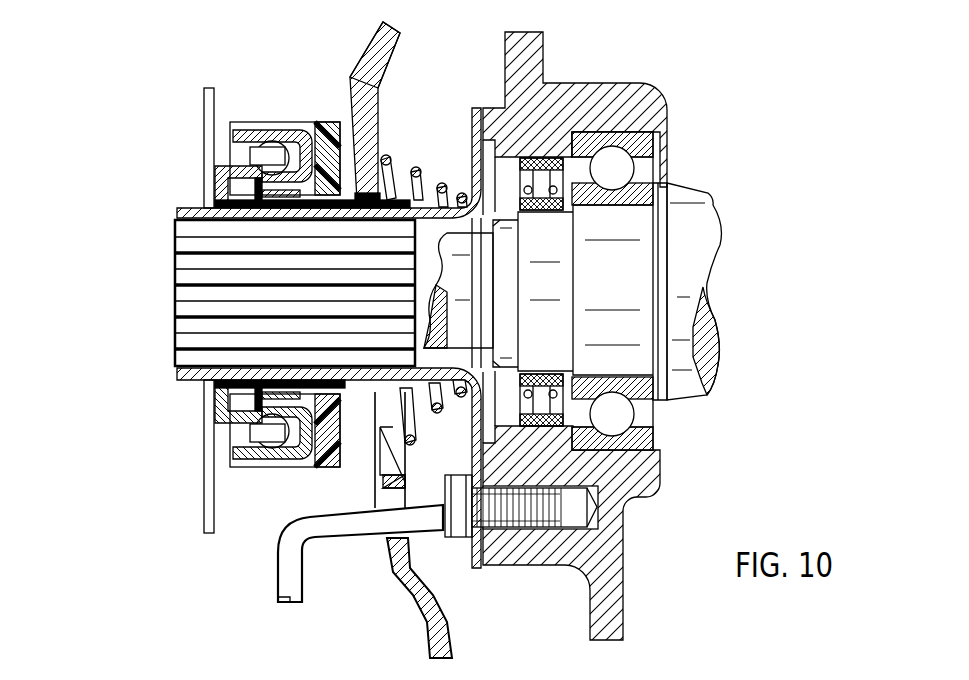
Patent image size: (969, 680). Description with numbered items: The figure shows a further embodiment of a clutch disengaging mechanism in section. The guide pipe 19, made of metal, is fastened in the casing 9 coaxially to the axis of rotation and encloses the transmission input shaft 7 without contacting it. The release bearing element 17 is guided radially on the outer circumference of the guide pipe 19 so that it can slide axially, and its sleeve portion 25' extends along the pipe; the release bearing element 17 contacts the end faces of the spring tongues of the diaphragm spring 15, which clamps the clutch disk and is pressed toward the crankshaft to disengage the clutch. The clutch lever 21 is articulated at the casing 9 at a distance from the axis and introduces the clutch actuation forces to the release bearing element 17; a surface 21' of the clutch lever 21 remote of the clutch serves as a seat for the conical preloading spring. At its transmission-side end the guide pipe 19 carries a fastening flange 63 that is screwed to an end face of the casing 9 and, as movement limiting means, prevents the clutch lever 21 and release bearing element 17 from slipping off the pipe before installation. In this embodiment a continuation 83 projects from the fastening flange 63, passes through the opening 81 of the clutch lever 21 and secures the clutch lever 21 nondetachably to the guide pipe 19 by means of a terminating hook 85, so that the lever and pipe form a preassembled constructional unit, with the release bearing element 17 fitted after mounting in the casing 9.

The transmission input shaft 7 is at (707, 395).
The casing 9 is at (620, 105).
The diaphragm spring 15 is at (207, 100).
The release bearing element 17 is at (213, 406).
The guide pipe 19 is at (183, 262).
The clutch lever 21 is at (350, 105).
The surface of the clutch lever 21' is at (399, 55).
The sleeve portion 25' is at (397, 525).
The fastening flange 63 is at (480, 567).
The opening 81 is at (407, 477).
The continuation 83 is at (330, 525).
The terminating hook 85 is at (292, 603).